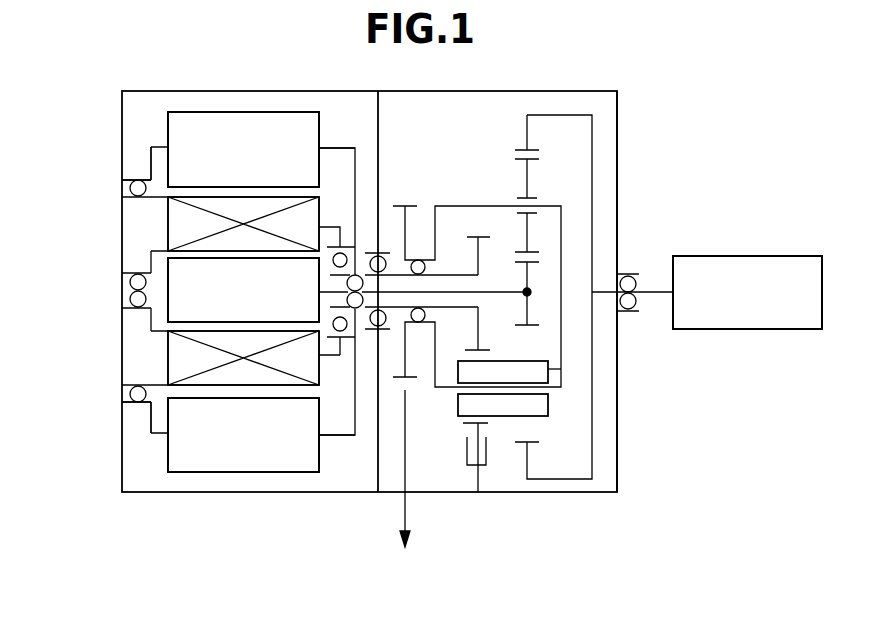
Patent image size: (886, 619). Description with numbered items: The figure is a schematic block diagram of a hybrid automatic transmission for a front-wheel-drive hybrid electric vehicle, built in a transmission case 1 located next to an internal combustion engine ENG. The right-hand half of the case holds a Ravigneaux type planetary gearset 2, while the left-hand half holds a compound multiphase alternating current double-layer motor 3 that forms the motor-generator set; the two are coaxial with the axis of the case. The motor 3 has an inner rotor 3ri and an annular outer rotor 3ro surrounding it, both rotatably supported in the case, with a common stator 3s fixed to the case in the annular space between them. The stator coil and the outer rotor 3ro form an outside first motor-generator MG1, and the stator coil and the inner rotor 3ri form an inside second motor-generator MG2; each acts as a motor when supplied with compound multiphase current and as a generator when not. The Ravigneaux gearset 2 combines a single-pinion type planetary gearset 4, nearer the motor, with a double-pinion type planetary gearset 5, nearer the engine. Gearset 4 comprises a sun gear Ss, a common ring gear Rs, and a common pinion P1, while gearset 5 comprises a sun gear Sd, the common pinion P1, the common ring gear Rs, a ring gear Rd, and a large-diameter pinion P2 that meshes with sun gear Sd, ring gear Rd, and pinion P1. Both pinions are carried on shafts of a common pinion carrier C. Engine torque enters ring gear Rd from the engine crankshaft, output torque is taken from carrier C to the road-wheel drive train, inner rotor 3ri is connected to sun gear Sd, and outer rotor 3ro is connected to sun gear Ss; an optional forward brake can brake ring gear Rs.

The transmission case 1 is at (262, 492).
The Ravigneaux type planetary gearset 2 is at (502, 434).
The compound multiphase alternating current motor 3 is at (176, 490).
The single-pinion type planetary gearset 4 is at (468, 186).
The double-pinion type planetary gearset 5 is at (542, 184).
The inner rotor 3ri is at (168, 316).
The stator 3s is at (182, 365).
The outer rotor 3ro is at (168, 453).
The first motor-generator MG1 is at (151, 419).
The second motor-generator MG2 is at (146, 351).
The ring gear Rd is at (527, 149).
The large-diameter pinion P2 is at (522, 163).
The sun gear Ss is at (467, 236).
The sun gear Sd is at (530, 327).
The common pinion carrier C is at (561, 369).
The common pinion P1 is at (548, 403).
The common ring gear Rs is at (467, 423).
The engine ENG is at (743, 256).